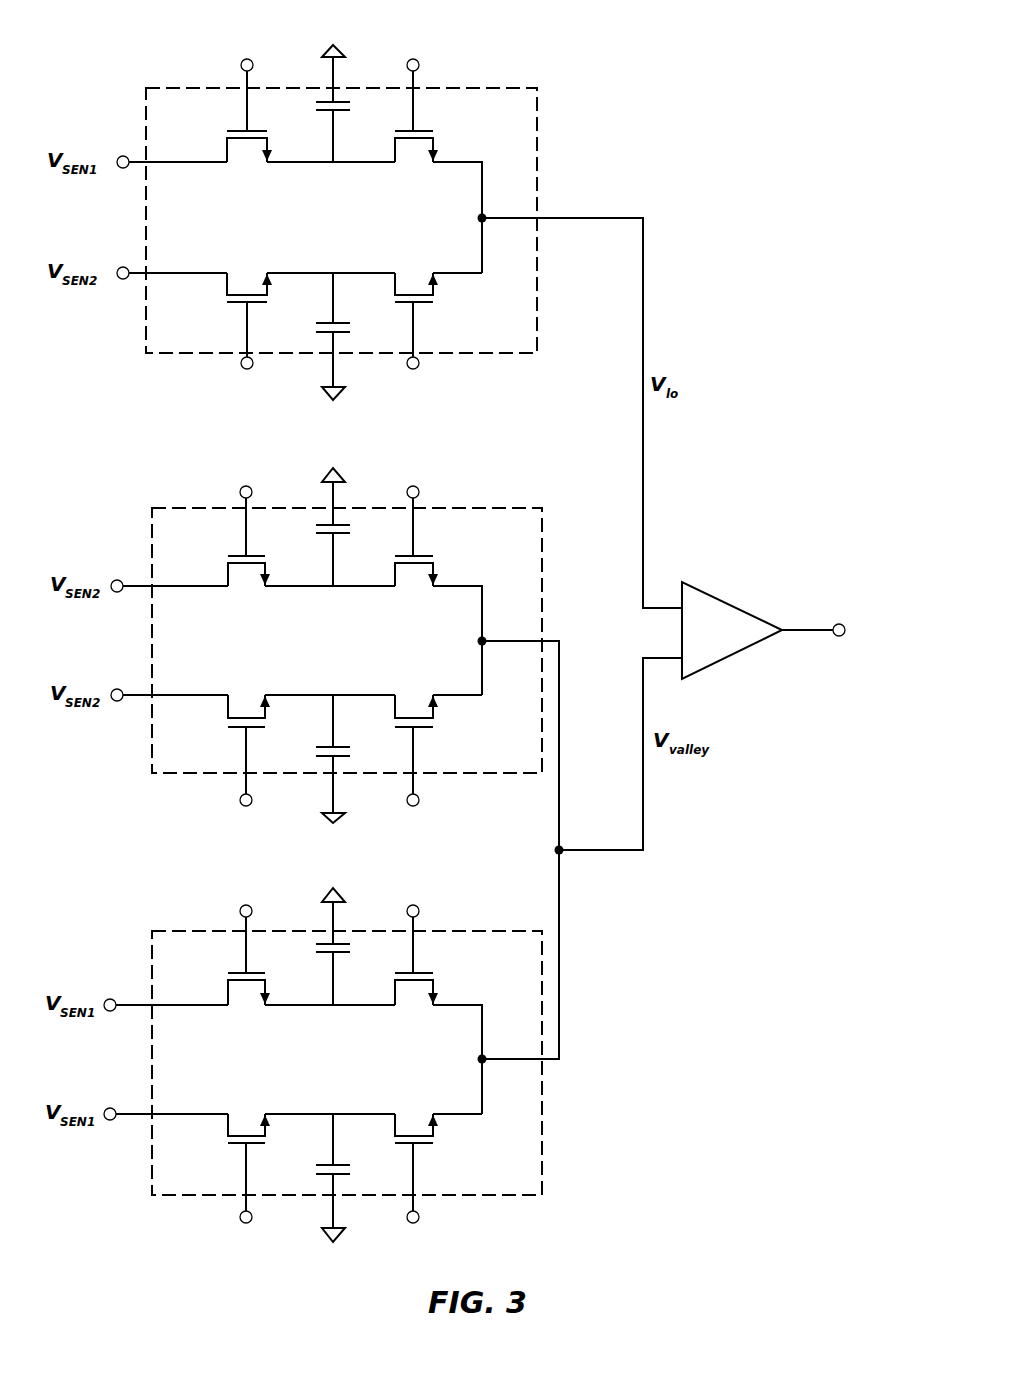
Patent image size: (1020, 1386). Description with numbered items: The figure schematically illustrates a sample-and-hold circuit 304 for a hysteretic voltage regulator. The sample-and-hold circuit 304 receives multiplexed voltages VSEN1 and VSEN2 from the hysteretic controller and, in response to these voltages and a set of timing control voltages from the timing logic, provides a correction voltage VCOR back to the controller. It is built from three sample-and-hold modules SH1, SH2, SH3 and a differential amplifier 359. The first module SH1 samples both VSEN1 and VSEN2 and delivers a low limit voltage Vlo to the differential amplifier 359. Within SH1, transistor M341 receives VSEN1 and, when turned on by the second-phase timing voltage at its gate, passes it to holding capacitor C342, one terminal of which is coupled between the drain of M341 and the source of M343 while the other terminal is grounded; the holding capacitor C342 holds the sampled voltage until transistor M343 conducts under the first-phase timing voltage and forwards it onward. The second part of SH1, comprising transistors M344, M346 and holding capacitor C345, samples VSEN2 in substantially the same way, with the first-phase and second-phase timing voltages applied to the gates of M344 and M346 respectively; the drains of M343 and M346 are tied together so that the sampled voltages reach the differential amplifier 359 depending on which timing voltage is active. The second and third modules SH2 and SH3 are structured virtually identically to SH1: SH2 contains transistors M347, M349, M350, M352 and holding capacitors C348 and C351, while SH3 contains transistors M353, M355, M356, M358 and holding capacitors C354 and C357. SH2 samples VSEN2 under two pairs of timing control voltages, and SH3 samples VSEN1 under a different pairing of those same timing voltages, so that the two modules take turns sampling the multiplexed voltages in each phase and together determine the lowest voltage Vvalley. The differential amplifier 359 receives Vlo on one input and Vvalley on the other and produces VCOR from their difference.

The sample-and-hold circuit 304 is at (752, 62).
The differential amplifier 359 is at (700, 590).
The sample-and-hold module SH1 is at (540, 120).
The sample-and-hold module SH2 is at (545, 540).
The sample-and-hold module SH3 is at (545, 1187).
The transistor M341 is at (237, 131).
The holding capacitor C342 is at (340, 111).
The transistor M343 is at (428, 137).
The transistor M344 is at (238, 303).
The holding capacitor C345 is at (340, 323).
The transistor M346 is at (425, 302).
The transistor M347 is at (238, 556).
The holding capacitor C348 is at (340, 534).
The transistor M349 is at (426, 556).
The transistor M350 is at (238, 727).
The holding capacitor C351 is at (341, 747).
The transistor M352 is at (422, 727).
The transistor M353 is at (238, 973).
The holding capacitor C354 is at (341, 953).
The transistor M355 is at (424, 973).
The transistor M356 is at (240, 1143).
The holding capacitor C357 is at (340, 1165).
The transistor M358 is at (422, 1143).